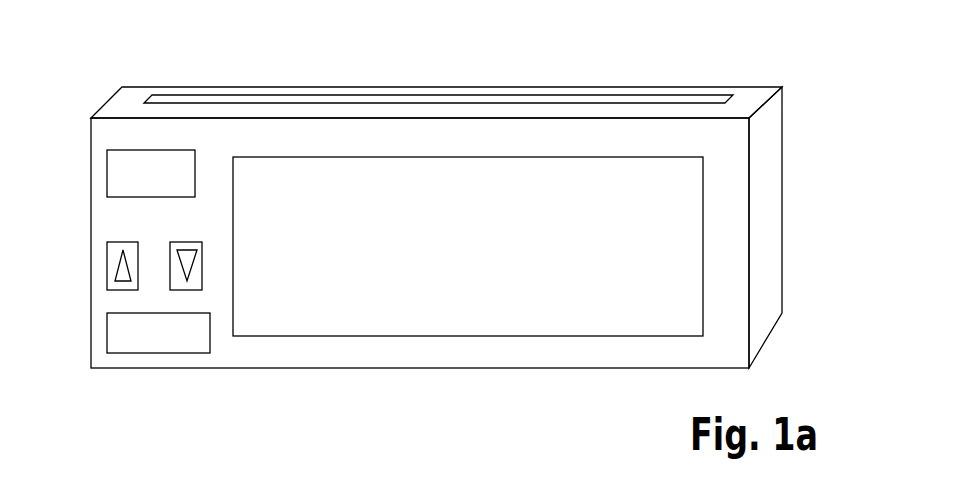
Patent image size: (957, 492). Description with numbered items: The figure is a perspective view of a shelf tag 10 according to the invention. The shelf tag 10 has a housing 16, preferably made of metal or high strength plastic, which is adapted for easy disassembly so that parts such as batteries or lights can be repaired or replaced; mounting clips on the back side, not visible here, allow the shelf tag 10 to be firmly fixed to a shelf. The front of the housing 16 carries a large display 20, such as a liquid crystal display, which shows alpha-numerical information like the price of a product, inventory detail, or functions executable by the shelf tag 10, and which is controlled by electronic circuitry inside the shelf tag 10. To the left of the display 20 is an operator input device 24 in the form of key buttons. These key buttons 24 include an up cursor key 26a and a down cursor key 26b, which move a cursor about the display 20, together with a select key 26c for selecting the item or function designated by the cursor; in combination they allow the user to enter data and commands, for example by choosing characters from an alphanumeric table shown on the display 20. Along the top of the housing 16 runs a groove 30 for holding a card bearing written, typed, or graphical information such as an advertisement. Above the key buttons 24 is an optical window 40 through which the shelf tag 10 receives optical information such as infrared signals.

The shelf tag 10 is at (792, 31).
The housing 16 is at (767, 152).
The display 20 is at (530, 243).
The operator input device 24 is at (151, 313).
The up cursor key 26a is at (127, 242).
The down cursor key 26b is at (202, 258).
The select key 26c is at (187, 353).
The groove 30 is at (419, 96).
The optical window 40 is at (190, 150).